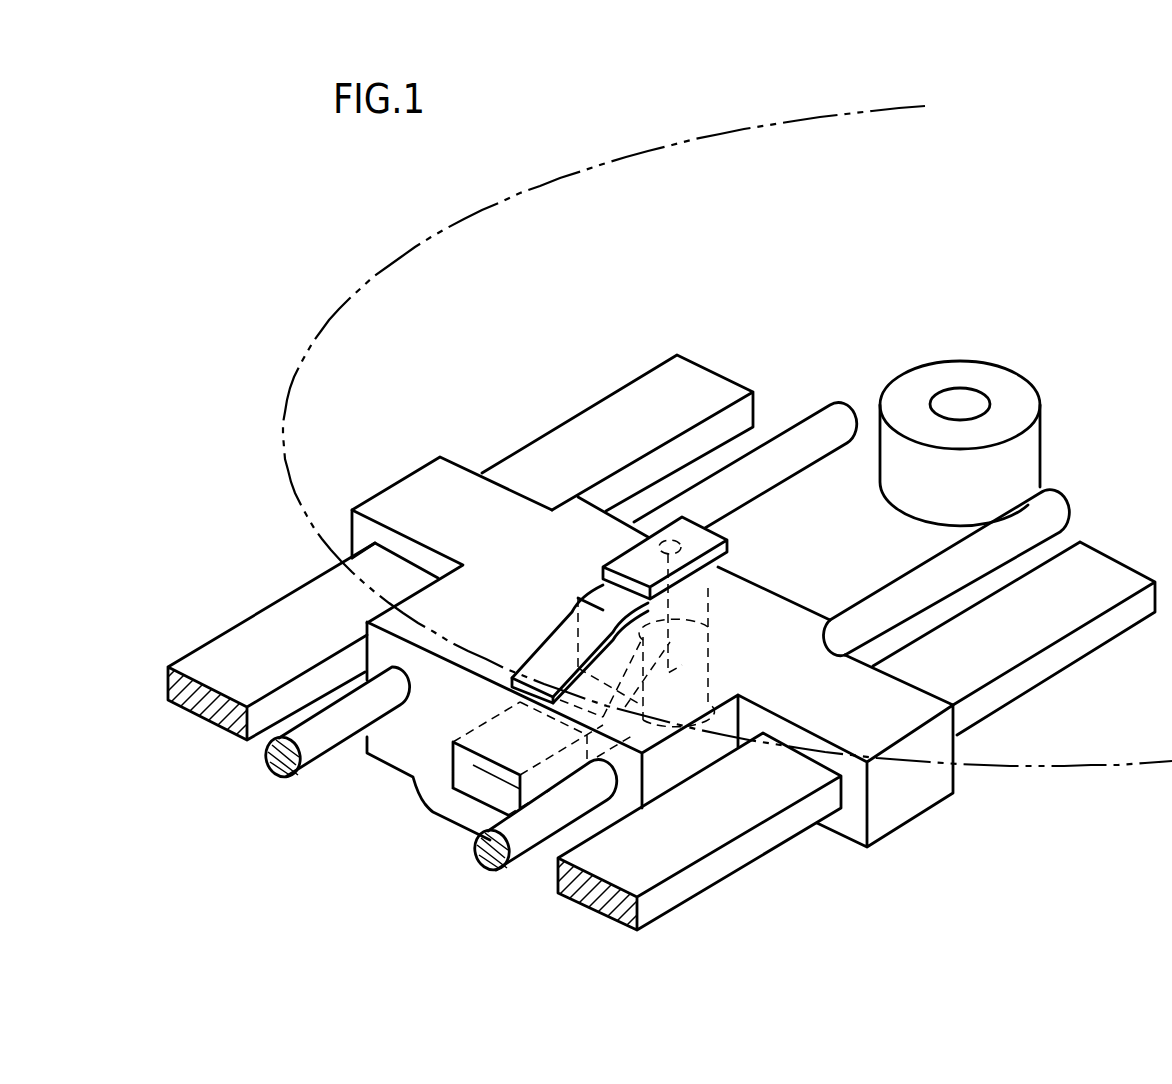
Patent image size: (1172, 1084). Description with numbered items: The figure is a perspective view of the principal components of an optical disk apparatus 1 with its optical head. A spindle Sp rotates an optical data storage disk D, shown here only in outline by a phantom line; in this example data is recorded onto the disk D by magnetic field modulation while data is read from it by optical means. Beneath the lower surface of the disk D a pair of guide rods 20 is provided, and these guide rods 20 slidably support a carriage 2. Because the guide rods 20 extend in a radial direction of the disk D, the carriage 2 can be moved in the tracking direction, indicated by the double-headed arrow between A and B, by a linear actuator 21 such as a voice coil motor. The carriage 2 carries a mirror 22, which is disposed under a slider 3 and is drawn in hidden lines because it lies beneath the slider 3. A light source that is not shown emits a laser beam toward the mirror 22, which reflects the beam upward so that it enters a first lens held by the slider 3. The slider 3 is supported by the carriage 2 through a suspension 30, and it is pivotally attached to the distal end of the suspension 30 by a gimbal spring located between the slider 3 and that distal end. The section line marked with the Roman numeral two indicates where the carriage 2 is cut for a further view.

The optical disk apparatus 1 is at (286, 302).
The carriage 2 is at (746, 578).
The slider 3 is at (618, 547).
The guide rods 20 is at (810, 430).
The linear actuator 21 is at (600, 416).
The mirror 22 is at (700, 630).
The suspension 30 is at (565, 651).
The optical data storage disk D is at (284, 450).
The spindle Sp is at (958, 363).